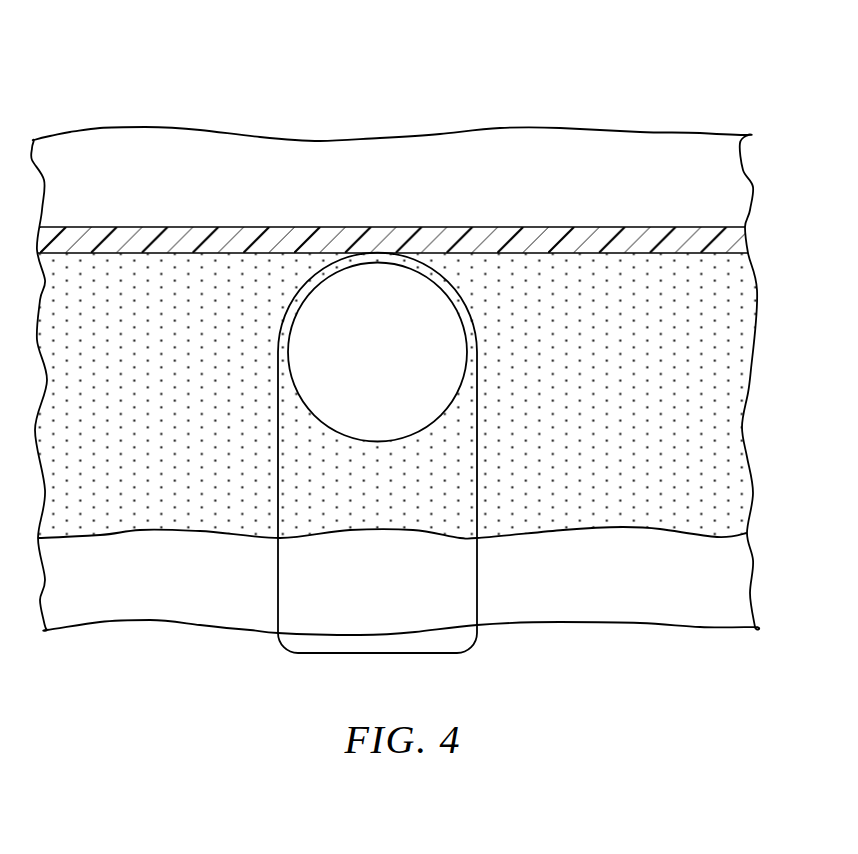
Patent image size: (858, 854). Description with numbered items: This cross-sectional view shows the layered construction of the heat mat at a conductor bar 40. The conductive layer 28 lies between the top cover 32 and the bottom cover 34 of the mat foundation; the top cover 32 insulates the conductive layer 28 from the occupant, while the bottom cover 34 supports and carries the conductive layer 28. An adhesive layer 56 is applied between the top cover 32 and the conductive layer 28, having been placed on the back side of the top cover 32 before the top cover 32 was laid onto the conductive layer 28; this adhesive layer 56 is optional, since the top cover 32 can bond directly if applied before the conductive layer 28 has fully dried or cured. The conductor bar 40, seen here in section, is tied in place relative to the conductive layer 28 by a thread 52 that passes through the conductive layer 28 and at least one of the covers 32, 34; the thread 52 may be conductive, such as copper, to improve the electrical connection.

The top cover 32 is at (720, 178).
The adhesive layer 56 is at (725, 240).
The conductive layer 28 is at (720, 393).
The bottom cover 34 is at (722, 583).
The conductor bar 40 is at (378, 352).
The thread 52 is at (475, 493).